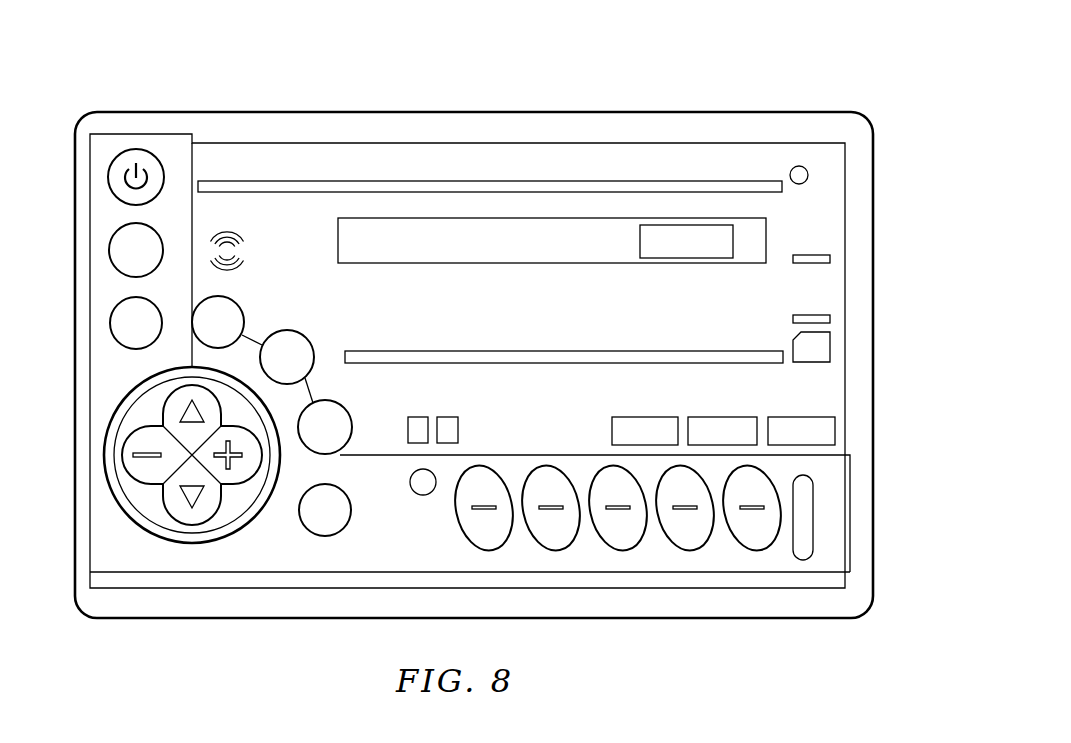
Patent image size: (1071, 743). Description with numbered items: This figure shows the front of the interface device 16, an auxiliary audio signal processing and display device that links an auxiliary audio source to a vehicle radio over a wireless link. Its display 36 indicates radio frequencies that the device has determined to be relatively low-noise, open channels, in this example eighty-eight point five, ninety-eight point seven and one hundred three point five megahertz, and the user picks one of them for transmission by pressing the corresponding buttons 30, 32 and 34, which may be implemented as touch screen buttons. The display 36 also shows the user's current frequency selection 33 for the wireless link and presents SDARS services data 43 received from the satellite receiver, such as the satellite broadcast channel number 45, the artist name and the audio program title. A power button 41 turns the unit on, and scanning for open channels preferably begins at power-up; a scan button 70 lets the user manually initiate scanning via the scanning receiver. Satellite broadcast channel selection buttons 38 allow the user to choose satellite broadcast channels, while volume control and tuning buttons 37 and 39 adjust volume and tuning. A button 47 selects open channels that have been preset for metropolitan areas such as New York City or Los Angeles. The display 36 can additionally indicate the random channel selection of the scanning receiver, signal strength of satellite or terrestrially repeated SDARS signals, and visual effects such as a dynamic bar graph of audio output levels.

The interface device 16 is at (648, 114).
The display 36 is at (827, 227).
The power button 41 is at (150, 157).
The button 47 is at (110, 323).
The scan button 70 is at (240, 306).
The button 30 is at (300, 333).
The button 32 is at (343, 450).
The button 34 is at (346, 528).
The volume control and tuning buttons 37 is at (165, 414).
The volume control and tuning buttons 39 is at (128, 444).
The SDARS services data 43 is at (610, 325).
The satellite broadcast channel number 45 is at (724, 253).
The current frequency selection 33 is at (584, 420).
The satellite broadcast channel selection buttons 38 is at (463, 553).